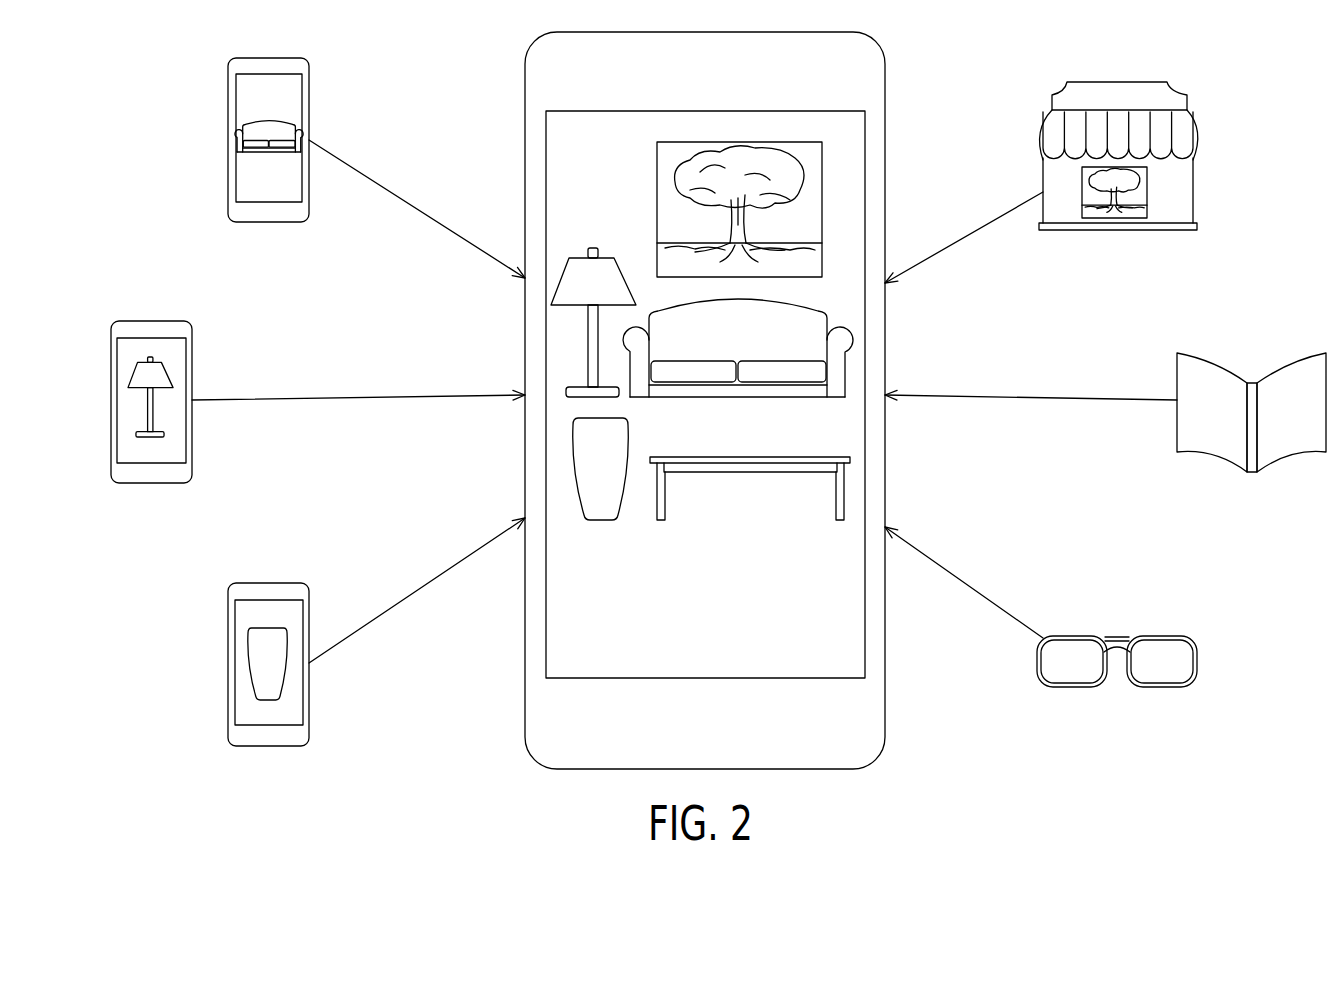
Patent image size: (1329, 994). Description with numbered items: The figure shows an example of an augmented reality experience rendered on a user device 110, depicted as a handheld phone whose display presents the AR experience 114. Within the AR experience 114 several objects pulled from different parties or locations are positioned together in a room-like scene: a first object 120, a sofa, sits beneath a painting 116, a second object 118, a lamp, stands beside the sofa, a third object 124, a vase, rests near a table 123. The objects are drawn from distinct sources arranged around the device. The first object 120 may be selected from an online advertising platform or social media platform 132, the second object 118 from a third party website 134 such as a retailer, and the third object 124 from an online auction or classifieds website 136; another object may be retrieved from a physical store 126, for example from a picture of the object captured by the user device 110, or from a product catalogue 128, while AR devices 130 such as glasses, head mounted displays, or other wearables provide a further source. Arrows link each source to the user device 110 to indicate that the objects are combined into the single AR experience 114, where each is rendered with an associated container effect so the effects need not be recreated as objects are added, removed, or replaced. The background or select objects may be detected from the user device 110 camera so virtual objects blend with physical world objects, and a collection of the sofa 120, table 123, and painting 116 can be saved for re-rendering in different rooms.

The user device 110 is at (832, 748).
The AR experience 114 is at (842, 160).
The painting 116 is at (657, 177).
The second object 118 is at (603, 258).
The first object 120 is at (850, 332).
The table 123 is at (665, 488).
The third object 124 is at (573, 468).
The physical store 126 is at (1182, 195).
The product catalogue 128 is at (1285, 378).
The AR devices 130 is at (1180, 637).
The online advertising platform or social media platform 132 is at (229, 140).
The third party website 134 is at (192, 367).
The online auction or classifieds website 136 is at (228, 665).